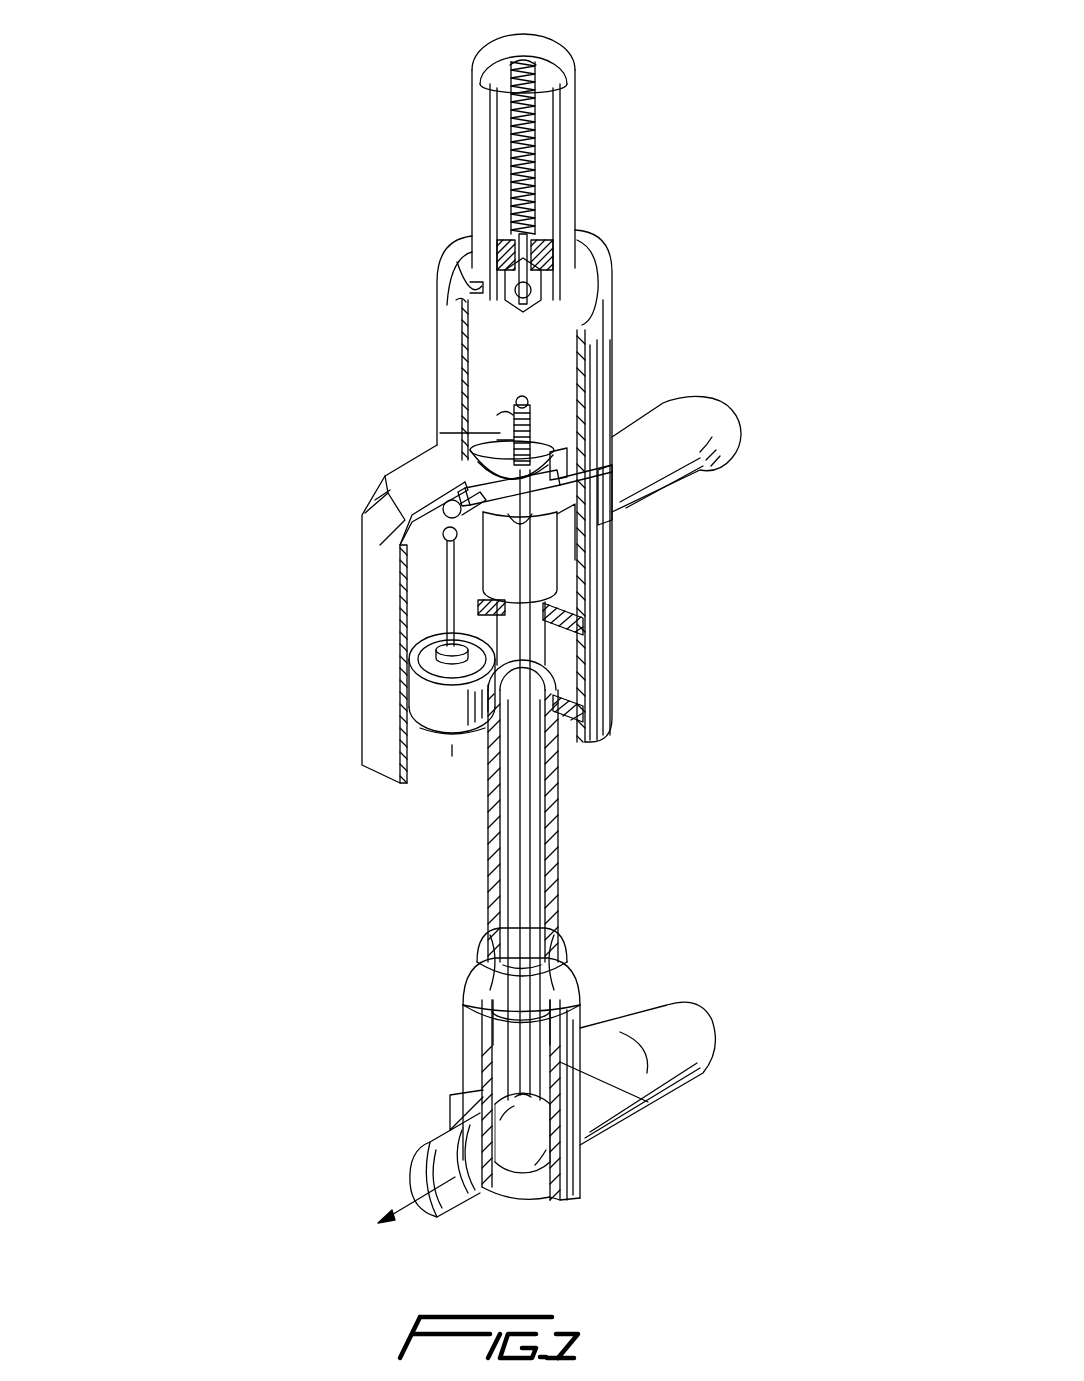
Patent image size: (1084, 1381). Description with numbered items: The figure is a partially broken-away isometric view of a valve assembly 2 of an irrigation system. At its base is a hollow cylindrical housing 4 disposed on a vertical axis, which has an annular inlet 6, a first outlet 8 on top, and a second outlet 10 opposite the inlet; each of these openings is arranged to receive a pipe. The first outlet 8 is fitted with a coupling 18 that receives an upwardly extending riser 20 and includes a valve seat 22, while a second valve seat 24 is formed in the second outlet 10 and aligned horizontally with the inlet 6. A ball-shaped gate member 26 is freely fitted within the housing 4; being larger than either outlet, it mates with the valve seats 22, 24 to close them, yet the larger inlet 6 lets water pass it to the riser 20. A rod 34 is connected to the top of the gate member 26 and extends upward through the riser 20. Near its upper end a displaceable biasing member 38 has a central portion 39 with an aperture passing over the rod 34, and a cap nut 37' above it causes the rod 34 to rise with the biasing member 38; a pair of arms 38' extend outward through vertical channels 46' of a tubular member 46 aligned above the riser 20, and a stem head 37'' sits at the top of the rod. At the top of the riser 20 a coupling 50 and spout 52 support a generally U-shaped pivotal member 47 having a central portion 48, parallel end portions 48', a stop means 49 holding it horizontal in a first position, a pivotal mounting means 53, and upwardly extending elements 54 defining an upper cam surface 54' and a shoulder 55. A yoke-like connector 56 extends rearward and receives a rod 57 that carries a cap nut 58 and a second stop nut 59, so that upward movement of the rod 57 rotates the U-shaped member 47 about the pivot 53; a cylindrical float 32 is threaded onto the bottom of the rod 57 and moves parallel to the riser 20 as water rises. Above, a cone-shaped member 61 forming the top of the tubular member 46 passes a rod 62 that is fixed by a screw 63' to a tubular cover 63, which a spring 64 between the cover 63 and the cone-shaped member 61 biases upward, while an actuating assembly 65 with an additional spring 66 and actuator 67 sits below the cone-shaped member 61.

The valve assembly 2 is at (295, 831).
The hollow cylindrical housing 4 is at (581, 1006).
The inlet 6 is at (712, 1038).
The first outlet 8 is at (512, 1031).
The second outlet 10 is at (420, 1162).
The coupling 18 is at (490, 1027).
The riser 20 is at (492, 882).
The valve seat 22 is at (650, 1100).
The second valve seat 24 is at (505, 1195).
The ball-shaped gate member 26 is at (542, 1202).
The float 32 is at (436, 728).
The rod 34 is at (528, 800).
The cap nut 37' is at (686, 517).
The stem head 37'' is at (524, 380).
The displaceable biasing member 38 is at (438, 424).
The arms 38' is at (417, 400).
The central portion 39 is at (533, 430).
The tubular member 46 is at (643, 500).
The vertical channels 46' is at (645, 521).
The U-shaped pivotal member 47 is at (588, 568).
The central portion 48 is at (520, 588).
The end portions 48' is at (639, 553).
The stop means 49 is at (520, 518).
The coupling 50 is at (445, 605).
The spout 52 is at (743, 425).
The pivotal mounting means 53 is at (600, 505).
The upwardly extending elements 54 is at (613, 485).
The upper cam surface 54' is at (648, 471).
The shoulder 55 is at (497, 443).
The connector 56 is at (398, 557).
The rod 57 is at (412, 692).
The cap nut 58 is at (423, 492).
The second stop nut 59 is at (447, 540).
The cone-shaped member 61 is at (515, 249).
The rod 62 is at (490, 258).
The tubular cover 63 is at (584, 167).
The screw 63' is at (591, 35).
The spring 64 is at (508, 113).
The actuating assembly 65 is at (497, 353).
The additional spring 66 is at (603, 270).
The actuator 67 is at (468, 306).